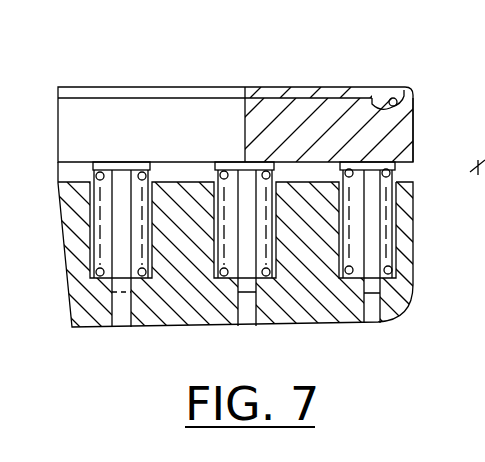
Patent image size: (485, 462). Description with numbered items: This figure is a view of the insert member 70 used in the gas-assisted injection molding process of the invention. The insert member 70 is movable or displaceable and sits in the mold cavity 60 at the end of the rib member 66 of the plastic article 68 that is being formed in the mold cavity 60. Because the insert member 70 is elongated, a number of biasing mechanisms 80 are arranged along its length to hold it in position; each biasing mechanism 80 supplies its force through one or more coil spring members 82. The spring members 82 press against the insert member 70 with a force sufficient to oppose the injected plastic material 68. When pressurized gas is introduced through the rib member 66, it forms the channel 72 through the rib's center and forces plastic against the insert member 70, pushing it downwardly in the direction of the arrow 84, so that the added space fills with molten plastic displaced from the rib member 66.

The mold cavity 60 is at (146, 90).
The plastic article 68 is at (198, 87).
The rib member 66 is at (372, 97).
The channel 72 is at (397, 98).
The insert member 70 is at (424, 126).
The biasing mechanism 80 is at (140, 250).
The coil spring member 82 is at (110, 268).
The arrow 84 is at (478, 166).